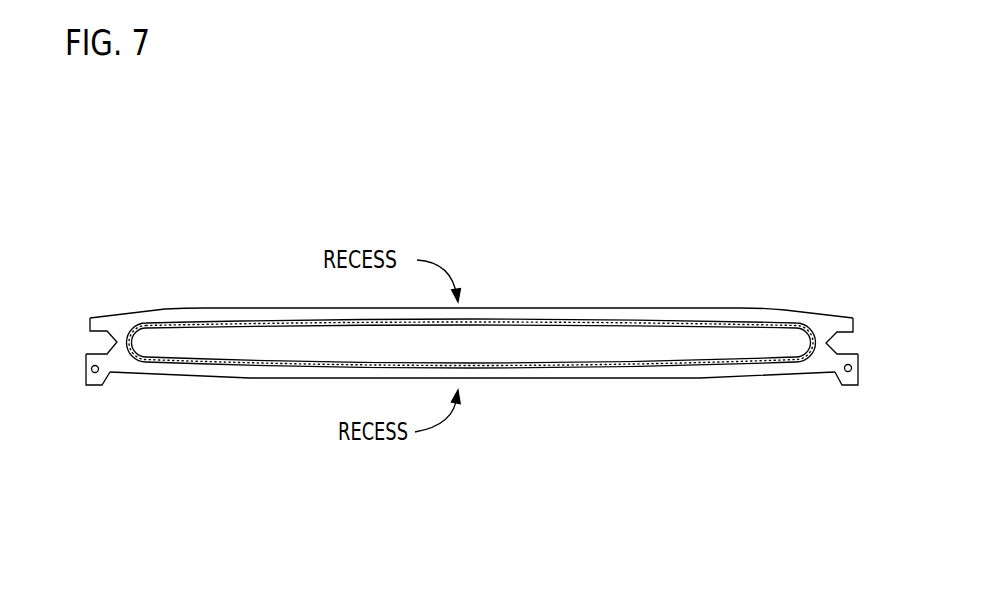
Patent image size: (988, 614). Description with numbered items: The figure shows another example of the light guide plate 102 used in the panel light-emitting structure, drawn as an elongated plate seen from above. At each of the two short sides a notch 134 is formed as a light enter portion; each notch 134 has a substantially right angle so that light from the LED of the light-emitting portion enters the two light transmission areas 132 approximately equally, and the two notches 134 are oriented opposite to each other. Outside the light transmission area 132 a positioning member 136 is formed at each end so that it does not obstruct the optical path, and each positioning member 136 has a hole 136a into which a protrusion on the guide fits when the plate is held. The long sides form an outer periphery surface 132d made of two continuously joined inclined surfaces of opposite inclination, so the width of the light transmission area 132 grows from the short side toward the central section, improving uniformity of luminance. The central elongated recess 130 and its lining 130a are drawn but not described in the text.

The light guide plate 102 is at (232, 270).
The slot / seal groove 130 is at (668, 345).
The seal member 130a is at (210, 363).
The light transmission area 132 is at (610, 313).
The outer periphery surface 132d is at (332, 385).
The notch 134 is at (86, 342).
The positioning member 136 is at (103, 377).
The hole 136a is at (83, 370).